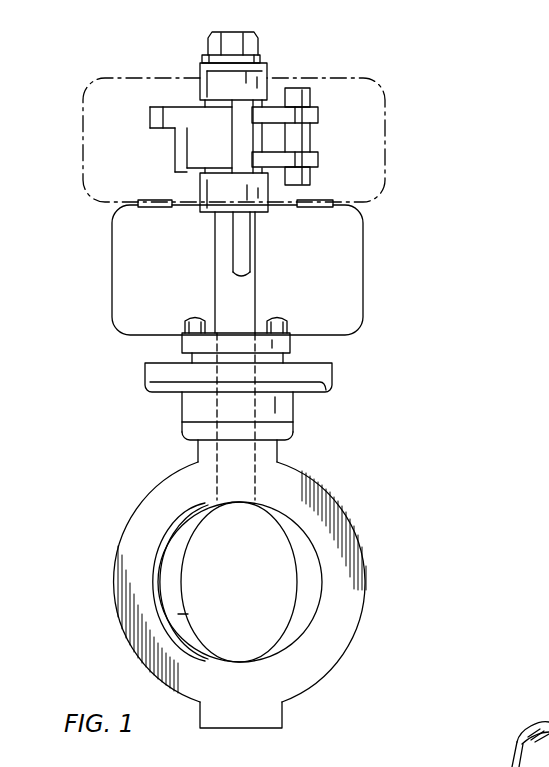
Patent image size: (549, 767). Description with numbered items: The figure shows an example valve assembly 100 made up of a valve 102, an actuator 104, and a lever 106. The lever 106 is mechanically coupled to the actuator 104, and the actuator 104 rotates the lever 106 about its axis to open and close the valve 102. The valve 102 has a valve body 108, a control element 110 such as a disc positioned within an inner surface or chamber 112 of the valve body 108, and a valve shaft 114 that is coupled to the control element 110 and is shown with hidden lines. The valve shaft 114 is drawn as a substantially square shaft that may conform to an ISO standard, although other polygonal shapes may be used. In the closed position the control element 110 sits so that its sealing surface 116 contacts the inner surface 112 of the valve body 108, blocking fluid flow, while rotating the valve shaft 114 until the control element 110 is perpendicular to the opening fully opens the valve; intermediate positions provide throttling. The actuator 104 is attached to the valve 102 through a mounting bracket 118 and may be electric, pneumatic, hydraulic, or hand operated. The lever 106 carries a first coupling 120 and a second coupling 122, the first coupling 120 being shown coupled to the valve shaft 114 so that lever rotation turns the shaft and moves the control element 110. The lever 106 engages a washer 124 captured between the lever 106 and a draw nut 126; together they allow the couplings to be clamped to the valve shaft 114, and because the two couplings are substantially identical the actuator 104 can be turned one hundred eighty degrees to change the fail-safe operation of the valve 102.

The valve assembly 100 is at (455, 253).
The valve 102 is at (309, 694).
The actuator 104 is at (387, 102).
The lever 106 is at (168, 147).
The valve body 108 is at (150, 513).
The control element 110 is at (260, 598).
The inner surface 112 is at (312, 614).
The valve shaft 114 is at (257, 250).
The sealing surface 116 is at (178, 577).
The mounting bracket 118 is at (112, 270).
The first coupling 120 is at (199, 209).
The second coupling 122 is at (268, 71).
The washer 124 is at (203, 58).
The draw nut 126 is at (260, 34).